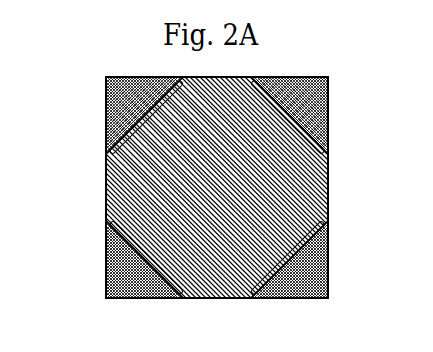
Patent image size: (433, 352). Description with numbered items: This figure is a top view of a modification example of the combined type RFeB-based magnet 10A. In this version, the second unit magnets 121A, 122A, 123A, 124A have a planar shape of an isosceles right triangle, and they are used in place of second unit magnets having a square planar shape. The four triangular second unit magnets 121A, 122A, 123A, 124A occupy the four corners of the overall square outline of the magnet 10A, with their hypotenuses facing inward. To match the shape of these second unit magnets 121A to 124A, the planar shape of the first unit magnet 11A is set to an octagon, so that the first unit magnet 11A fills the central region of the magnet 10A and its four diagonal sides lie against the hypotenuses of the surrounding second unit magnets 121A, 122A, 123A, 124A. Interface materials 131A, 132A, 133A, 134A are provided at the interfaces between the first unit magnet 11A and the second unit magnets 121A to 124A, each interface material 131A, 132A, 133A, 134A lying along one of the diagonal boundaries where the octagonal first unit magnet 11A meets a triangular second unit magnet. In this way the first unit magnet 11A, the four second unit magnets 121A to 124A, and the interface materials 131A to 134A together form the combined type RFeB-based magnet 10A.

The combined type RFeB-based magnet 10A is at (219, 214).
The first unit magnet 11A is at (316, 196).
The second unit magnet 121A is at (116, 104).
The second unit magnet 122A is at (316, 106).
The second unit magnet 123A is at (313, 268).
The second unit magnet 124A is at (120, 268).
The interface material 131A is at (112, 157).
The interface material 132A is at (314, 160).
The interface material 133A is at (323, 213).
The interface material 134A is at (110, 213).